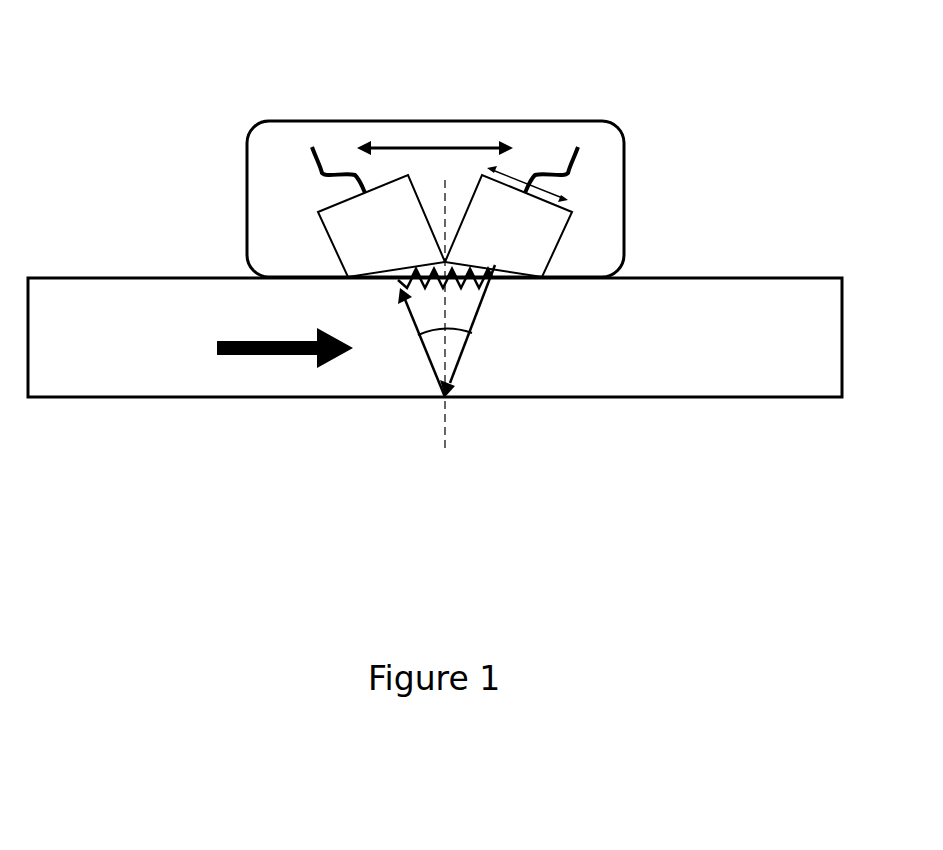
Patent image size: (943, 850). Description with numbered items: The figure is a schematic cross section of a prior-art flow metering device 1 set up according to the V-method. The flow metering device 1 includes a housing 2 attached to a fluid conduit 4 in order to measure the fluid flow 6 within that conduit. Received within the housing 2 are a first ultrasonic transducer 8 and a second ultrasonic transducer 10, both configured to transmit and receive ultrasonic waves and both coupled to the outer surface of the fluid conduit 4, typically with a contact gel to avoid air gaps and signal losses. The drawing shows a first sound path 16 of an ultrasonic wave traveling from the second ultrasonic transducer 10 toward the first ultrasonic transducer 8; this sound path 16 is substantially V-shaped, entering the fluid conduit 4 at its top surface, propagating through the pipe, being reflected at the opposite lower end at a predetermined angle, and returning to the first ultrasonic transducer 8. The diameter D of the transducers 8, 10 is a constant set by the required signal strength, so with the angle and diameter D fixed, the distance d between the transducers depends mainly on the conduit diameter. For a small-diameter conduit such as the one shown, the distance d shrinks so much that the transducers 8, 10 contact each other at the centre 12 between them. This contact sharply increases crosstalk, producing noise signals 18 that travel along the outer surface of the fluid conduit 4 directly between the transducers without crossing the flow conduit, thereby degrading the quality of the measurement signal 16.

The flow metering device 1 is at (643, 103).
The housing 2 is at (625, 187).
The fluid conduit 4 is at (793, 279).
The fluid flow 6 is at (287, 356).
The first ultrasonic transducer 8 is at (368, 200).
The second ultrasonic transducer 10 is at (526, 200).
The centre 12 is at (445, 262).
The first sound path 16 is at (483, 317).
The noise signals 18 is at (515, 287).
The distance between the first and second transducers d is at (440, 148).
The diameter of the transducers D is at (557, 192).